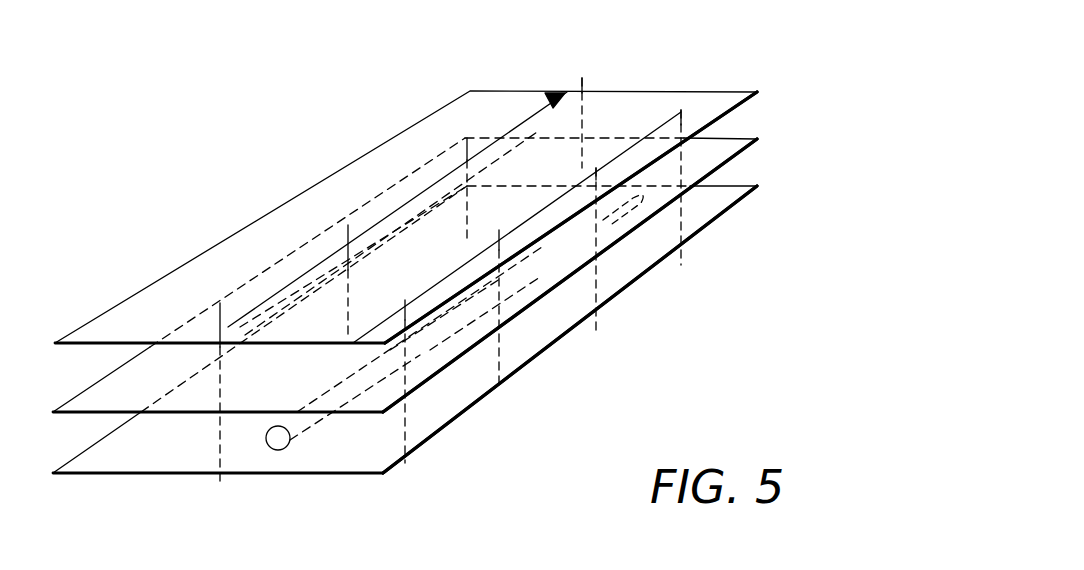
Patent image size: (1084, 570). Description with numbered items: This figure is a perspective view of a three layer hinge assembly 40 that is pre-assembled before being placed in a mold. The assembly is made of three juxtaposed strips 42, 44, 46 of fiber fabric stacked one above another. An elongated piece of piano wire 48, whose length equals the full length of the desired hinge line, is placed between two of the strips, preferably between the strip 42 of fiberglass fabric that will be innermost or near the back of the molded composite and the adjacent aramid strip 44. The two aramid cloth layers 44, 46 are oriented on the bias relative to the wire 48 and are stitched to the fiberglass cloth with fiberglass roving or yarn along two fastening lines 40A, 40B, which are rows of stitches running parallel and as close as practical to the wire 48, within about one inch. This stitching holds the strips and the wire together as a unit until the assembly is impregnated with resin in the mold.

The hinge assembly 40 is at (730, 232).
The fastening line 40A is at (466, 155).
The fastening line 40B is at (694, 103).
The strip of fiber fabric 42 is at (348, 458).
The strip of fiber fabric 44 is at (378, 402).
The strip of fiber fabric 46 is at (410, 313).
The piano wire 48 is at (275, 450).